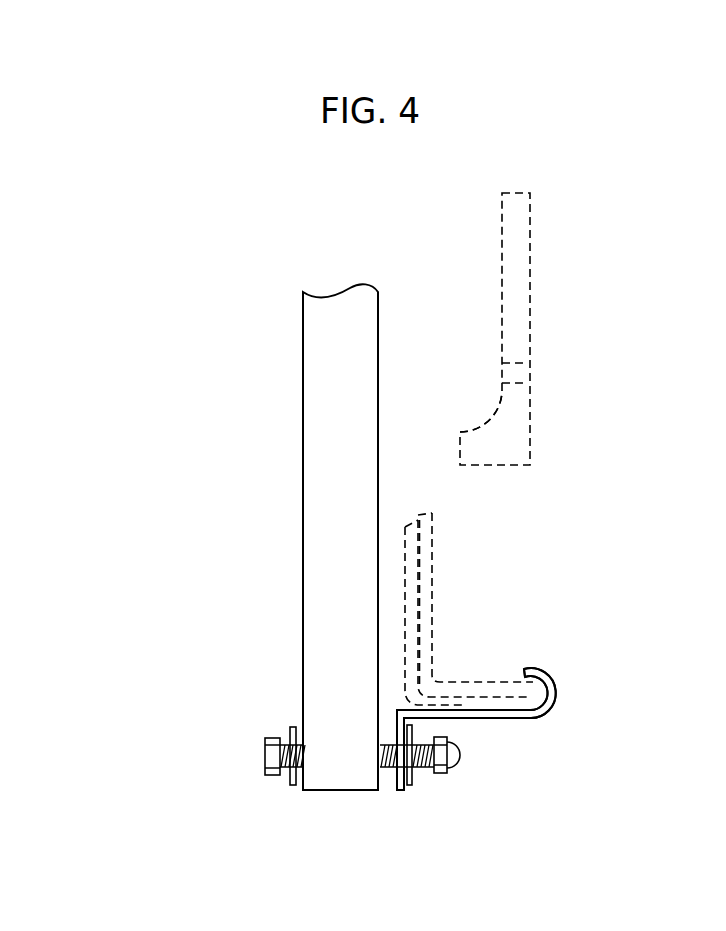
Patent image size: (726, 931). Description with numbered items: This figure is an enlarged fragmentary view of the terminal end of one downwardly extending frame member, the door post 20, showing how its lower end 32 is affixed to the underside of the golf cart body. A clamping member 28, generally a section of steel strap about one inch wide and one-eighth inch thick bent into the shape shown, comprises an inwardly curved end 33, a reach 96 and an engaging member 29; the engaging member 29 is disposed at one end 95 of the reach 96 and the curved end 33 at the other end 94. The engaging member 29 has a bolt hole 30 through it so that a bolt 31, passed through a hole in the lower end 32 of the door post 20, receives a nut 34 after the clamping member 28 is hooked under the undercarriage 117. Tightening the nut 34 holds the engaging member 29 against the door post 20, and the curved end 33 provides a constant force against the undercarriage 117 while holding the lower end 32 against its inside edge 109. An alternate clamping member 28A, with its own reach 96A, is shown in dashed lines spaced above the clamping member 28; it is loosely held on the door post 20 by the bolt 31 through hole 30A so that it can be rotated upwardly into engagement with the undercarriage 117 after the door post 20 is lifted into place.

The door post 20 is at (322, 348).
The clamping member 28 is at (500, 715).
The alternate clamping member 28A is at (519, 275).
The engaging member 29 is at (397, 793).
The bolt hole 30 is at (407, 787).
The hole 30A is at (525, 372).
The bolt 31 is at (453, 762).
The lower end 32 is at (317, 772).
The inwardly curved end 33 is at (523, 682).
The nut 34 is at (278, 757).
The other end of reach 94 is at (540, 718).
The one end of reach 95 is at (447, 762).
The reach 96 is at (432, 717).
The reach of alternate clamping member 96A is at (470, 428).
The inside edge 109 is at (547, 697).
The undercarriage 117 is at (427, 588).